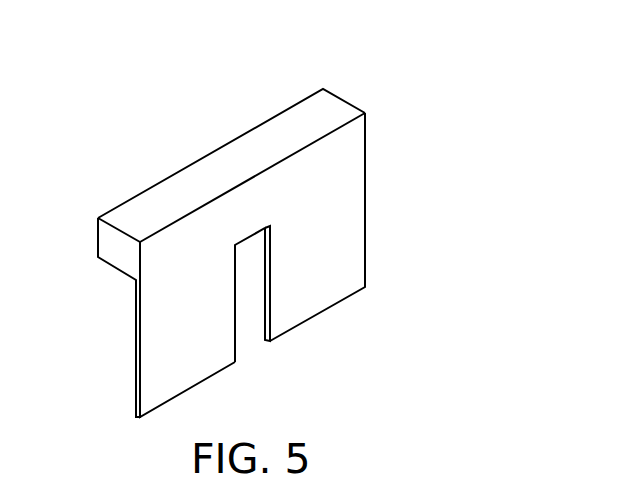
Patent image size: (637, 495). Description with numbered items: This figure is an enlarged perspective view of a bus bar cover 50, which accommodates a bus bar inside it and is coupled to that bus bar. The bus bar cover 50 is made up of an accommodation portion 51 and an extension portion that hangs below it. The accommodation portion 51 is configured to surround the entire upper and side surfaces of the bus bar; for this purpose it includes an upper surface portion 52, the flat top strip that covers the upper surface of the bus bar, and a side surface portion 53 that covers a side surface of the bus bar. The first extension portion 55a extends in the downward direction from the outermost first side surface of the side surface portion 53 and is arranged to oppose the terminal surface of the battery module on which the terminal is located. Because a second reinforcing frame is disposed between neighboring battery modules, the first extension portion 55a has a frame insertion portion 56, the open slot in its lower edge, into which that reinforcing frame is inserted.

The bus bar cover 50 is at (198, 33).
The accommodation portion 51 is at (358, 93).
The upper surface portion 52 is at (266, 147).
The side surface portion 53 is at (112, 250).
The first extension portion 55a is at (321, 265).
The frame insertion portion 56 is at (251, 286).